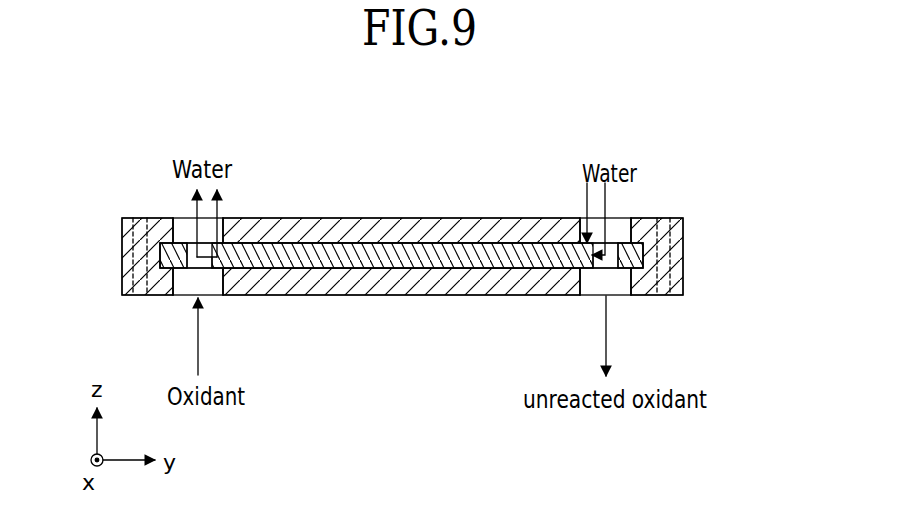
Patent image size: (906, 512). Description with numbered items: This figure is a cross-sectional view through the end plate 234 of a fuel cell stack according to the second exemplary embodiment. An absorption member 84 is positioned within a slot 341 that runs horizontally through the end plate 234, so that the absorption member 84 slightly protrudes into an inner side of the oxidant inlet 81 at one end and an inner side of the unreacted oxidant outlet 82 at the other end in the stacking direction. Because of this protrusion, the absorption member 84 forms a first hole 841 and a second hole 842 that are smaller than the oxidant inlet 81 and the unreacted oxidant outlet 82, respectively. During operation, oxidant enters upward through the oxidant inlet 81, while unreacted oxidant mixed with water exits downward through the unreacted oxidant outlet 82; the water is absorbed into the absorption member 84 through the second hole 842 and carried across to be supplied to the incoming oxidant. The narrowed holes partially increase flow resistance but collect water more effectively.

The oxidant inlet 81 is at (190, 232).
The unreacted oxidant outlet 82 is at (612, 232).
The absorption member 84 is at (405, 258).
The first hole 841 is at (196, 258).
The second hole 842 is at (608, 270).
The slot 341 is at (455, 262).
The end plate 234 is at (684, 233).